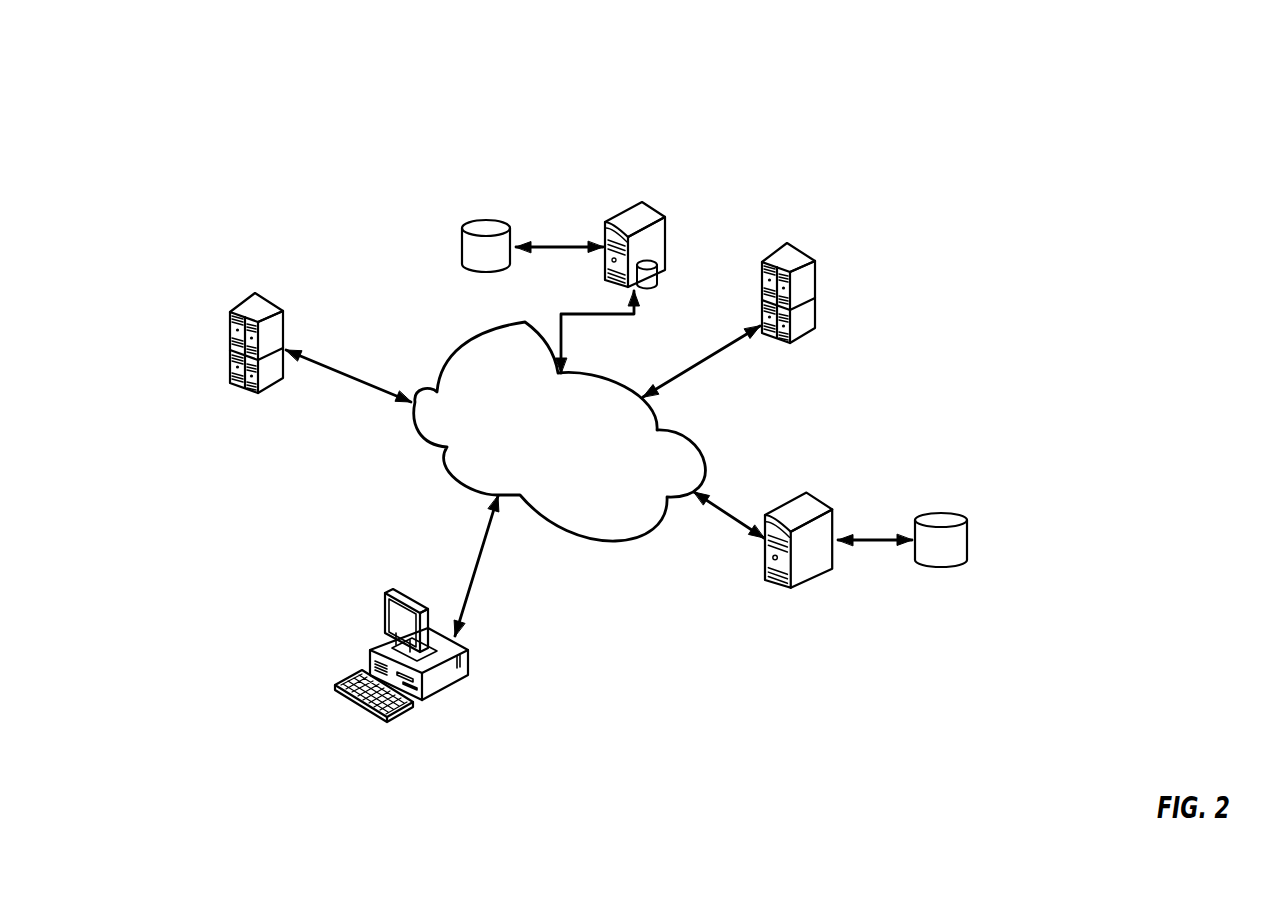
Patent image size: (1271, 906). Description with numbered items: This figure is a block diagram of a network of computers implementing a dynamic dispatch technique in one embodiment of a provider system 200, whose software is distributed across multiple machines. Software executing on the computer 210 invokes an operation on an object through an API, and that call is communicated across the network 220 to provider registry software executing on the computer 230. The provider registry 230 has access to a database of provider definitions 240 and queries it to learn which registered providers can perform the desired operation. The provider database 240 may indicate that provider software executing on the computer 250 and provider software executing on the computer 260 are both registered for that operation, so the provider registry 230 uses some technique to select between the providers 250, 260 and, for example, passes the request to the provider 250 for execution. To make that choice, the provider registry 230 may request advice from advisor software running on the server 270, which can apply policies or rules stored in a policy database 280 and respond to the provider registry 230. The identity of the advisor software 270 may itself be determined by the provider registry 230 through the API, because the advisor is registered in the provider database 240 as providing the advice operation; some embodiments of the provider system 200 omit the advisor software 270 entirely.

The provider system 200 is at (525, 83).
The computer 210 is at (452, 682).
The network 220 is at (702, 465).
The provider registry 230 is at (665, 235).
The database of provider definitions 240 is at (485, 220).
The provider 250 is at (268, 303).
The provider 260 is at (817, 263).
The advisor software server 270 is at (835, 507).
The policy database 280 is at (967, 537).